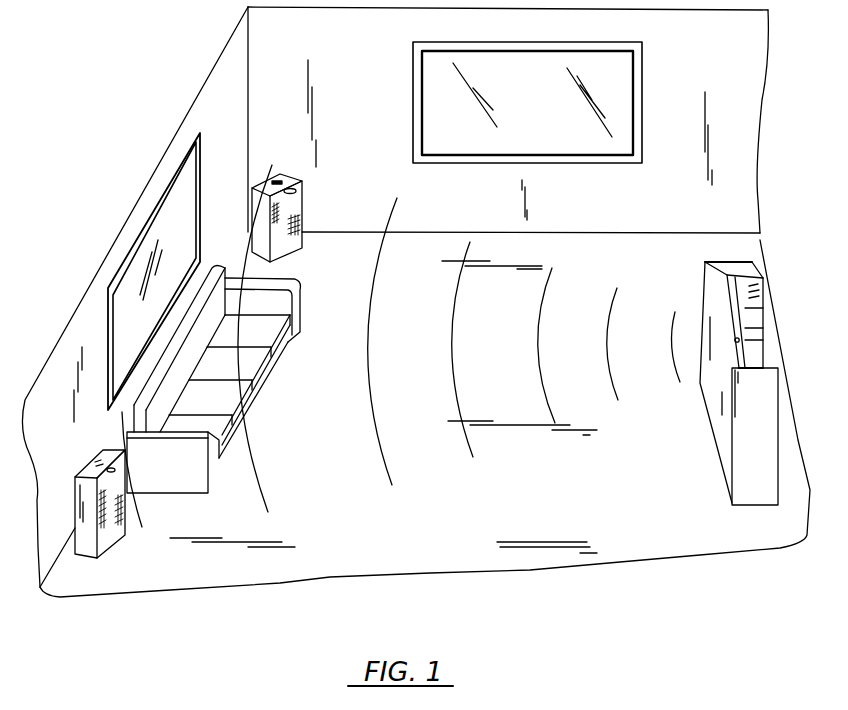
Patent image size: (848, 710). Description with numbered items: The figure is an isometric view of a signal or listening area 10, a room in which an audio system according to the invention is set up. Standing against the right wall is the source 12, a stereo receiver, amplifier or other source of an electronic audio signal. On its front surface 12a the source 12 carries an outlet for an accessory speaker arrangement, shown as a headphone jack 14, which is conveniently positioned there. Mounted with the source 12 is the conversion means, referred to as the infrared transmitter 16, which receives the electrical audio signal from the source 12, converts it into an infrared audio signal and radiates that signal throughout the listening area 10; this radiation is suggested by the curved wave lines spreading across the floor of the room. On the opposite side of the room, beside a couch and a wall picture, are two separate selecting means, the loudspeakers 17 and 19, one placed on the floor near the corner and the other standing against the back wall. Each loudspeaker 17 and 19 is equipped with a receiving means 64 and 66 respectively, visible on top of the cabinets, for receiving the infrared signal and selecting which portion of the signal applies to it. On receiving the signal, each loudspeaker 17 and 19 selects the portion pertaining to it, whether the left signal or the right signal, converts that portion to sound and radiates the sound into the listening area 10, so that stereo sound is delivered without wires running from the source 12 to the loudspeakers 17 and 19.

The signal/listening area 10 is at (458, 540).
The source 12 is at (730, 383).
The front surface 12a is at (730, 305).
The headphone jack 14 is at (734, 340).
The infrared transmitter 16 is at (752, 286).
The loudspeaker 17 is at (123, 507).
The loudspeaker 19 is at (302, 196).
The receiving means 64 is at (117, 466).
The receiving means 66 is at (294, 193).